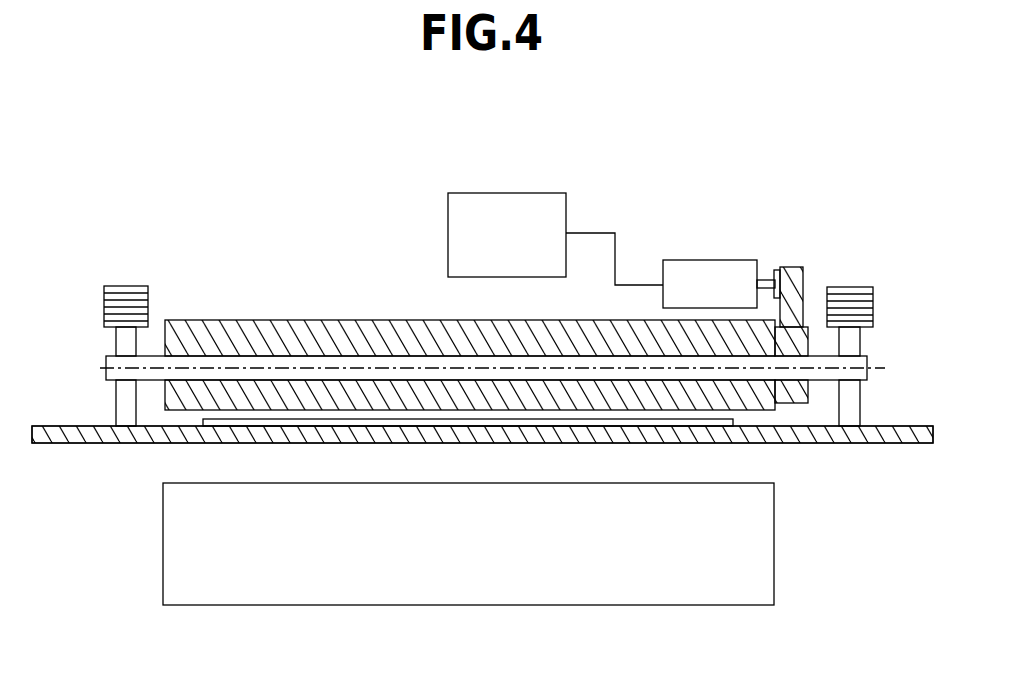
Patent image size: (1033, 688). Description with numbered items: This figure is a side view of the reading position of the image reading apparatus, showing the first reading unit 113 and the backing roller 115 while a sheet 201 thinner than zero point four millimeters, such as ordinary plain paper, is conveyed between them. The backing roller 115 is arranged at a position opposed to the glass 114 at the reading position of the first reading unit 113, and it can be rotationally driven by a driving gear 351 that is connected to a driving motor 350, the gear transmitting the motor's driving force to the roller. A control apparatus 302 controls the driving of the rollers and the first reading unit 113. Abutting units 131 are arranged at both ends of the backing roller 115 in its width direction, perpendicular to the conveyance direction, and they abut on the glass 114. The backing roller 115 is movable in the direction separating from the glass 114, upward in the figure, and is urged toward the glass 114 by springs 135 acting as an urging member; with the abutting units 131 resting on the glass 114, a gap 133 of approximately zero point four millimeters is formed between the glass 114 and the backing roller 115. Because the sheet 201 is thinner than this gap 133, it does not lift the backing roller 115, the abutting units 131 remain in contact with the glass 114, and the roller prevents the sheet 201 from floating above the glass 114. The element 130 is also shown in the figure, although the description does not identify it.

The first reading unit 113 is at (175, 548).
The glass 114 is at (125, 443).
The backing roller 115 is at (288, 320).
The shaft 130 is at (107, 356).
The abutting units 131 is at (122, 405).
The gap 133 is at (795, 443).
The springs 135 is at (126, 286).
The sheet 201 is at (750, 416).
The control apparatus 302 is at (503, 207).
The driving motor 350 is at (712, 275).
The driving gear 351 is at (794, 270).